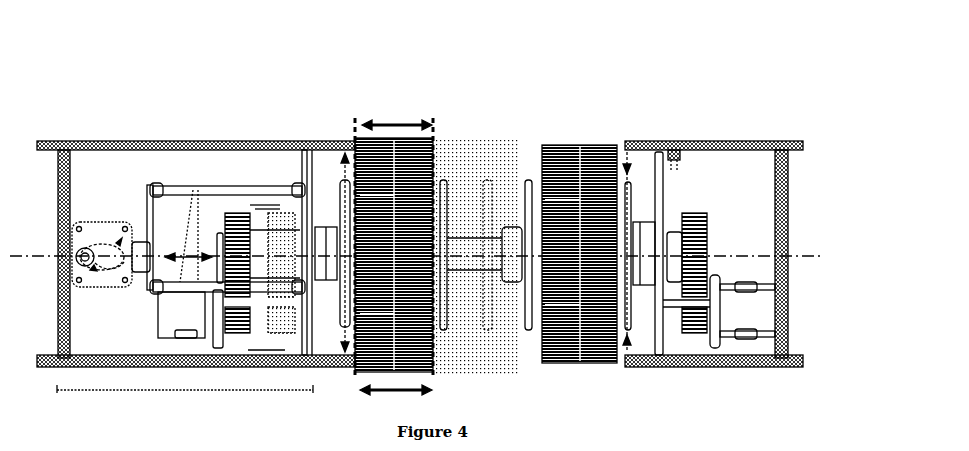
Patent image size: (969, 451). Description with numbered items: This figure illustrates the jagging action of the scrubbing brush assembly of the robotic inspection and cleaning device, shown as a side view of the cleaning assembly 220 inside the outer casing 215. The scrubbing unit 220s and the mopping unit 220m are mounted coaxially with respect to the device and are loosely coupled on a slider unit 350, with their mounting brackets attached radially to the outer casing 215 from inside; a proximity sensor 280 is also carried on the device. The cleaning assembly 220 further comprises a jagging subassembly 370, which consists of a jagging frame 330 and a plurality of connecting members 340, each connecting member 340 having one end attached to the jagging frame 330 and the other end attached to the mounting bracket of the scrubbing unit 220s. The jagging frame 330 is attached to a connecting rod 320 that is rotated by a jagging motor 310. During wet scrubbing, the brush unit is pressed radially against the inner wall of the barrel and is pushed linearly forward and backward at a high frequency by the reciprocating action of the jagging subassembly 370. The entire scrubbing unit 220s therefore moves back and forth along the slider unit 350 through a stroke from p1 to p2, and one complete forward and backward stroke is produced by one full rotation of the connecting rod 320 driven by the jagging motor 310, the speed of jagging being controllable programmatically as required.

The outer casing 215 is at (732, 137).
The cleaning assembly 220 is at (494, 50).
The scrubbing unit 220s is at (385, 112).
The mopping unit 220m is at (573, 128).
The proximity sensor 280 is at (676, 140).
The jagging motor 310 is at (92, 218).
The connecting rod 320 is at (101, 292).
The jagging frame 330 is at (148, 180).
The connecting member 340 is at (232, 183).
The slider unit 350 is at (487, 278).
The jagging subassembly 370 is at (180, 403).
The stroke start position p1 is at (356, 117).
The stroke end position p2 is at (439, 115).